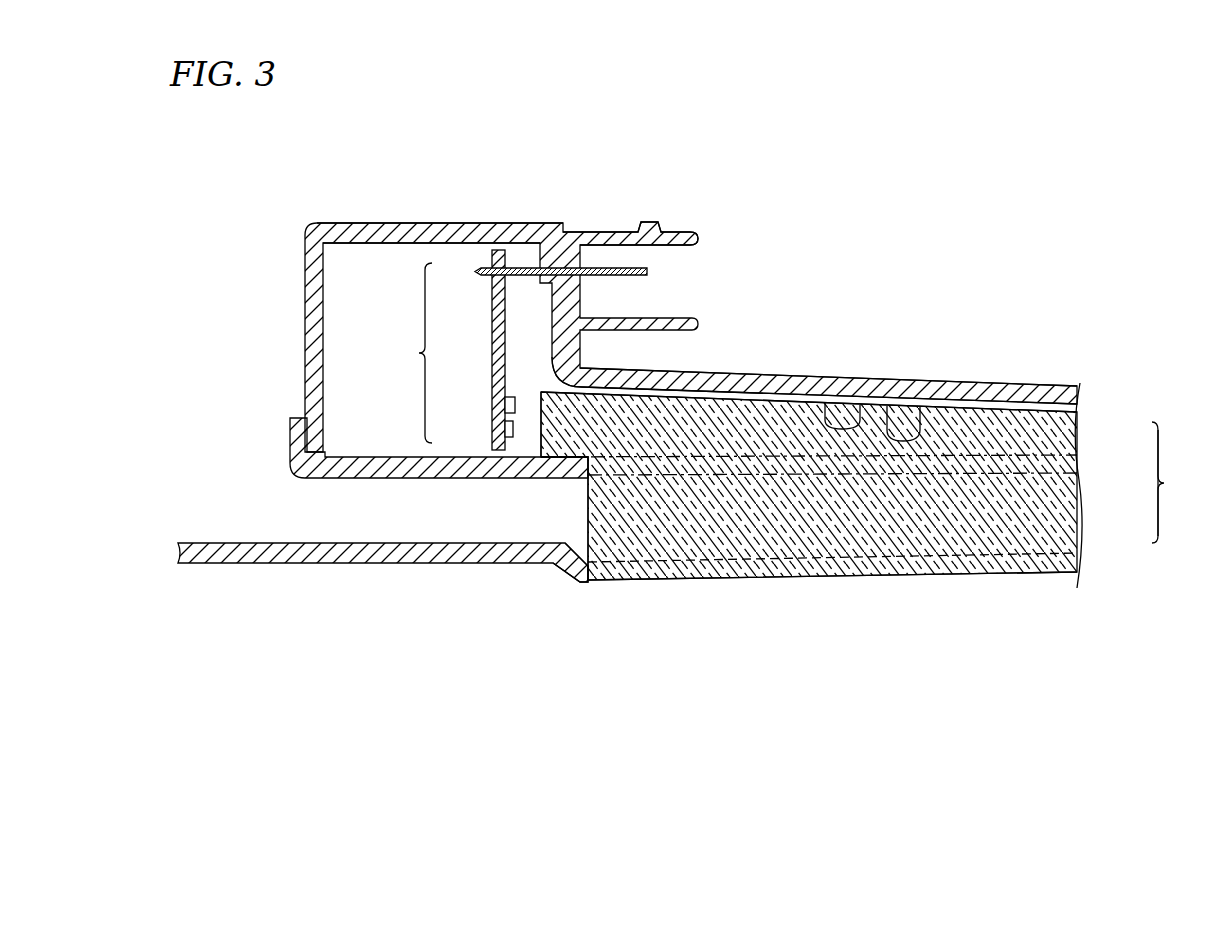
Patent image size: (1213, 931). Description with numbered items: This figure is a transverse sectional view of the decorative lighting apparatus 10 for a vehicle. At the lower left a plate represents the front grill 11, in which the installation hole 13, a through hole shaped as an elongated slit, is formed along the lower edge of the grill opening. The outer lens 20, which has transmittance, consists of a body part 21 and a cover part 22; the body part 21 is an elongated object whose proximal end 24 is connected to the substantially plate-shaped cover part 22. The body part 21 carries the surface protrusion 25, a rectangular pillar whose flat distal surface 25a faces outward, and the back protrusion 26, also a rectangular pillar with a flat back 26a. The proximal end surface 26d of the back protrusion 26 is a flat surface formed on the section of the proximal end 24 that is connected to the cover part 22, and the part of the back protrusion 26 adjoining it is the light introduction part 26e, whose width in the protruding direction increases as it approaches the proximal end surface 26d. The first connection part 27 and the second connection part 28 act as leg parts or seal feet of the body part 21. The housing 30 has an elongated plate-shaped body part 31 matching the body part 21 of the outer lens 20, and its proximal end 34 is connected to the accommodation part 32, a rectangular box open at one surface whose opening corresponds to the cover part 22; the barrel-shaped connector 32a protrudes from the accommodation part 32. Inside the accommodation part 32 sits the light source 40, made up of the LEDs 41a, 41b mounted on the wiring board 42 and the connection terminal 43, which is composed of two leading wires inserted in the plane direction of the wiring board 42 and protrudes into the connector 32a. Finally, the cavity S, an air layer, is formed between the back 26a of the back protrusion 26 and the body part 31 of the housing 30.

The decorative lighting apparatus 10 is at (1067, 192).
The front grill 11 is at (440, 565).
The installation hole 13 is at (594, 584).
The outer lens 20 is at (1172, 482).
The body part 21 is at (1182, 483).
The cover part 22 is at (378, 480).
The proximal end 24 is at (548, 483).
The surface protrusion 25 is at (1080, 541).
The surface 25a is at (731, 582).
The back protrusion 26 is at (1083, 438).
The back 26a is at (910, 412).
The proximal end surface 26d is at (534, 428).
The light introduction part 26e is at (741, 398).
The first connection part 27 is at (1085, 471).
The second connection part 28 is at (868, 487).
The housing 30 is at (348, 216).
The body part 31 is at (803, 378).
The accommodation part 32 is at (416, 223).
The connector 32a is at (677, 232).
The proximal end 34 is at (584, 358).
The light source 40 is at (413, 353).
The LED 41a is at (506, 432).
The LED 41b is at (507, 405).
The wiring board 42 is at (492, 315).
The connection terminal 43 is at (476, 271).
The cavity S is at (853, 398).